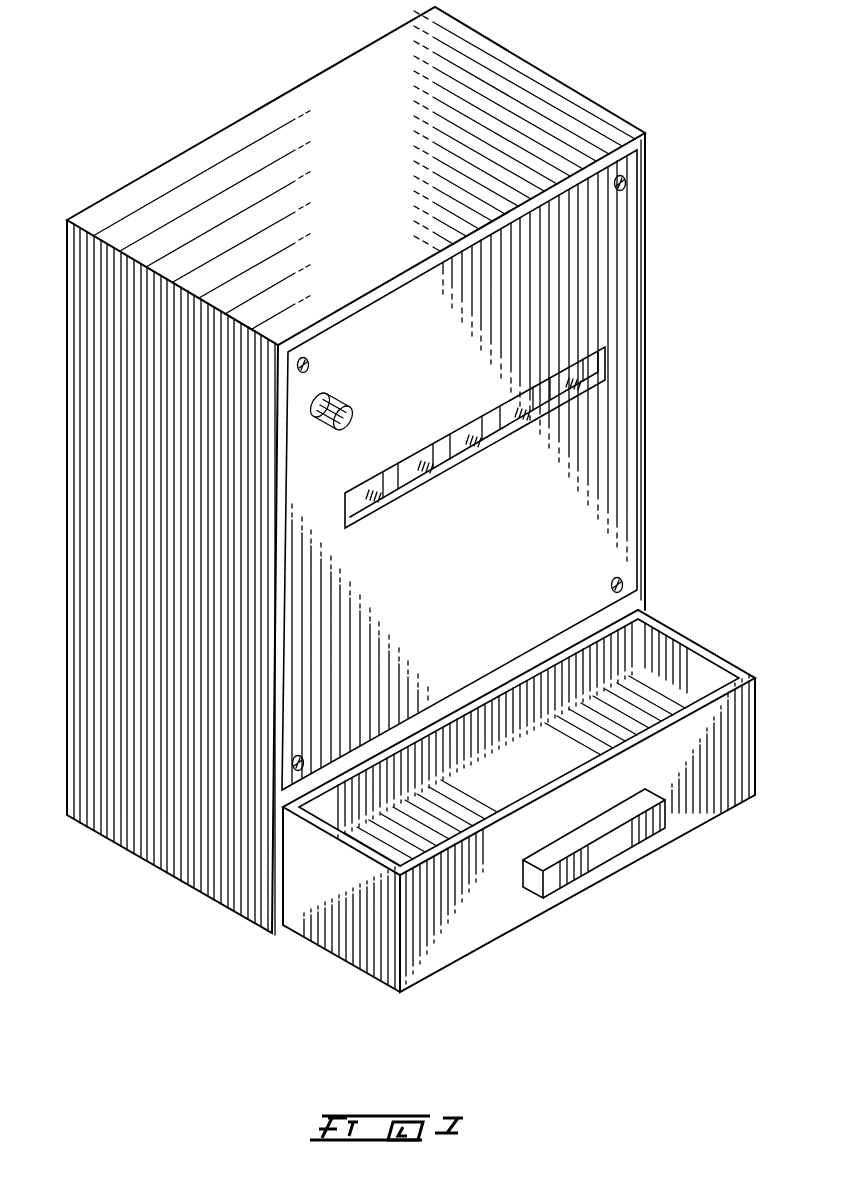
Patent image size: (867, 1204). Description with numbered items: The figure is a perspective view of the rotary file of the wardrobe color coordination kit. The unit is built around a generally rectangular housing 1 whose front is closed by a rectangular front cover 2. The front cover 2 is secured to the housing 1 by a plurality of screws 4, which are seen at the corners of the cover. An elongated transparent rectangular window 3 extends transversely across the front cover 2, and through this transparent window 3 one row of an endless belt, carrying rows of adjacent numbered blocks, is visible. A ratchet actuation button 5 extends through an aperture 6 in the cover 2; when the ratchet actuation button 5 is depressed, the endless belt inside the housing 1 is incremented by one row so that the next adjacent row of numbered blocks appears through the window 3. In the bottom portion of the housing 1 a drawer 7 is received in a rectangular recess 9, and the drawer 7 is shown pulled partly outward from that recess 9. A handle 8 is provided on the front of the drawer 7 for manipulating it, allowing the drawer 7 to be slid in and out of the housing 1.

The housing 1 is at (352, 78).
The front cover 2 is at (580, 540).
The transparent window 3 is at (600, 358).
The screws 4 is at (640, 165).
The ratchet actuation button 5 is at (352, 410).
The aperture 6 is at (313, 392).
The drawer 7 is at (475, 932).
The handle 8 is at (603, 850).
The rectangular recess 9 is at (285, 863).